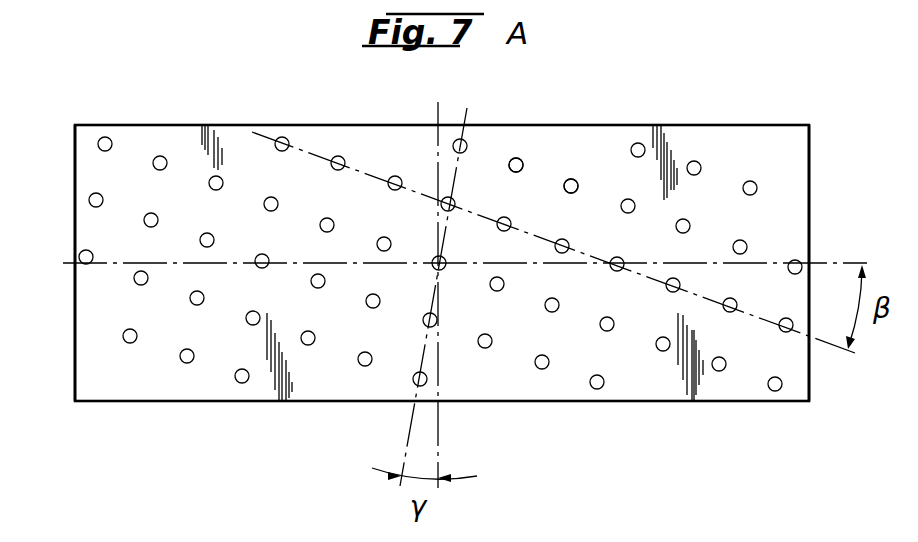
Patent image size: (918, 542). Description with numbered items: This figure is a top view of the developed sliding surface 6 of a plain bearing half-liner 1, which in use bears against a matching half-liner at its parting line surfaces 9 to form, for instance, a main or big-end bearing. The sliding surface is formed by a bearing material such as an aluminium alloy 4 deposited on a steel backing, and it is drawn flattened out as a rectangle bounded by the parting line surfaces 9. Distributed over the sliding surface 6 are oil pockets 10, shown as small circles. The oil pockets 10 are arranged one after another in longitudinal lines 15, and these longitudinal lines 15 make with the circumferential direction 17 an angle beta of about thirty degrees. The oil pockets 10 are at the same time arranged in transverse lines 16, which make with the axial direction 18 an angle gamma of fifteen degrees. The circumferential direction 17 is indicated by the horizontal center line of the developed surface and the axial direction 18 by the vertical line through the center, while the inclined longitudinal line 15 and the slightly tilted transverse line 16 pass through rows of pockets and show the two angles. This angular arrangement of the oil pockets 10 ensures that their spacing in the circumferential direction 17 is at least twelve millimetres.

The plain bearing half-liner 1 is at (185, 124).
The aluminium alloy 4 is at (645, 383).
The sliding surface 6 is at (694, 140).
The parting line surfaces 9 is at (72, 239).
The oil pockets 10 is at (571, 179).
The longitudinal lines 15 is at (829, 346).
The transverse lines 16 is at (406, 460).
The circumferential direction 17 is at (835, 263).
The axial direction 18 is at (439, 460).